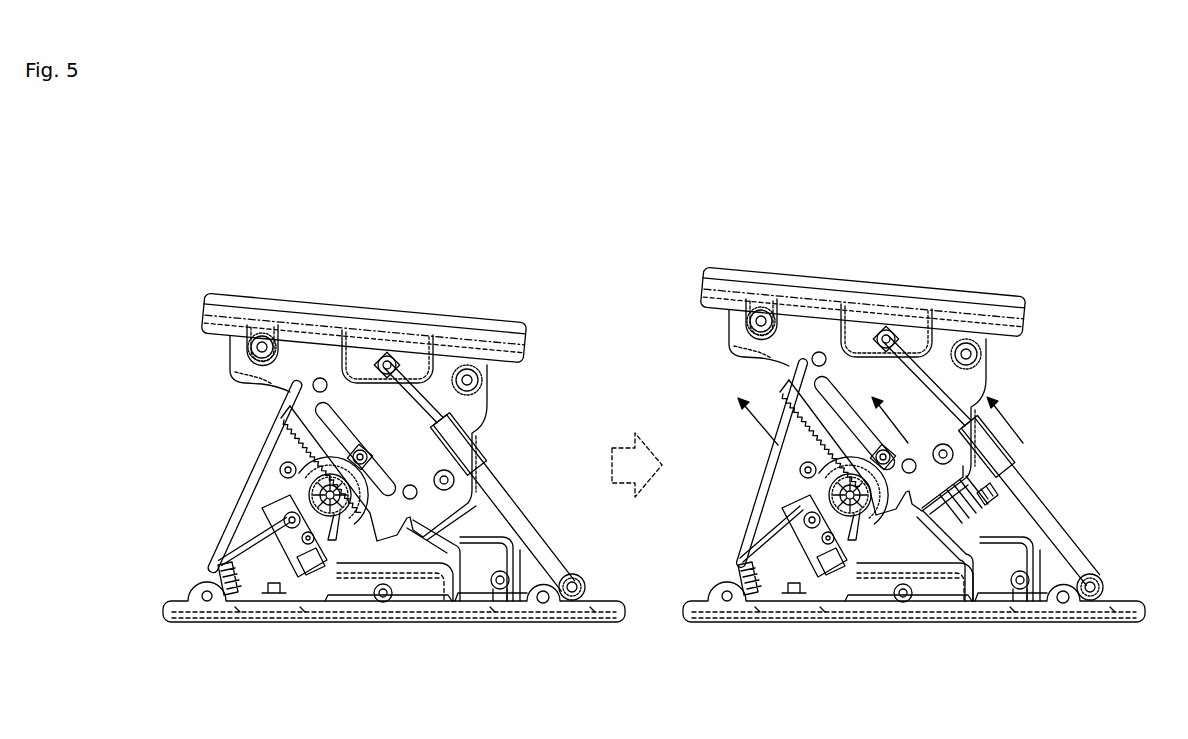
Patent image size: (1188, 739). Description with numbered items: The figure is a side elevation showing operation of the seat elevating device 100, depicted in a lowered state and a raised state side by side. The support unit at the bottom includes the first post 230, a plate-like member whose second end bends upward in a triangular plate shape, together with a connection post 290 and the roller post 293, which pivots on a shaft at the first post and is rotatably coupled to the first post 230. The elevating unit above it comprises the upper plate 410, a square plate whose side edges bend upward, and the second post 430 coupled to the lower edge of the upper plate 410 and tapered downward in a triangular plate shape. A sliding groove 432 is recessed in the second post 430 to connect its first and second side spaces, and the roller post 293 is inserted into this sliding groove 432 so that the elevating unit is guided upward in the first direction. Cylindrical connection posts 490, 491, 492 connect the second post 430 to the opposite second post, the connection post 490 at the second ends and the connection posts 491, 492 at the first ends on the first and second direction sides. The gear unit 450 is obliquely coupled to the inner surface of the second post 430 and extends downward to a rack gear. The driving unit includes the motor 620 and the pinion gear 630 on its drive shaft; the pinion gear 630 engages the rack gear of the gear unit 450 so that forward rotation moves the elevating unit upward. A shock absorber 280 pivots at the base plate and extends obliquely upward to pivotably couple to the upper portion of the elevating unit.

The seat elevating device 100 is at (234, 188).
The first post 230 is at (428, 585).
The shock absorber 280 is at (513, 507).
The connection post 290 is at (383, 605).
The roller post 293 is at (386, 368).
The upper plate 410 is at (303, 305).
The second post 430 is at (486, 365).
The sliding groove 432 is at (343, 430).
The gear unit 450 is at (287, 423).
The connection post 490 is at (446, 479).
The connection post 491 is at (262, 345).
The connection post 492 is at (467, 378).
The motor 620 is at (252, 557).
The pinion gear 630 is at (330, 510).